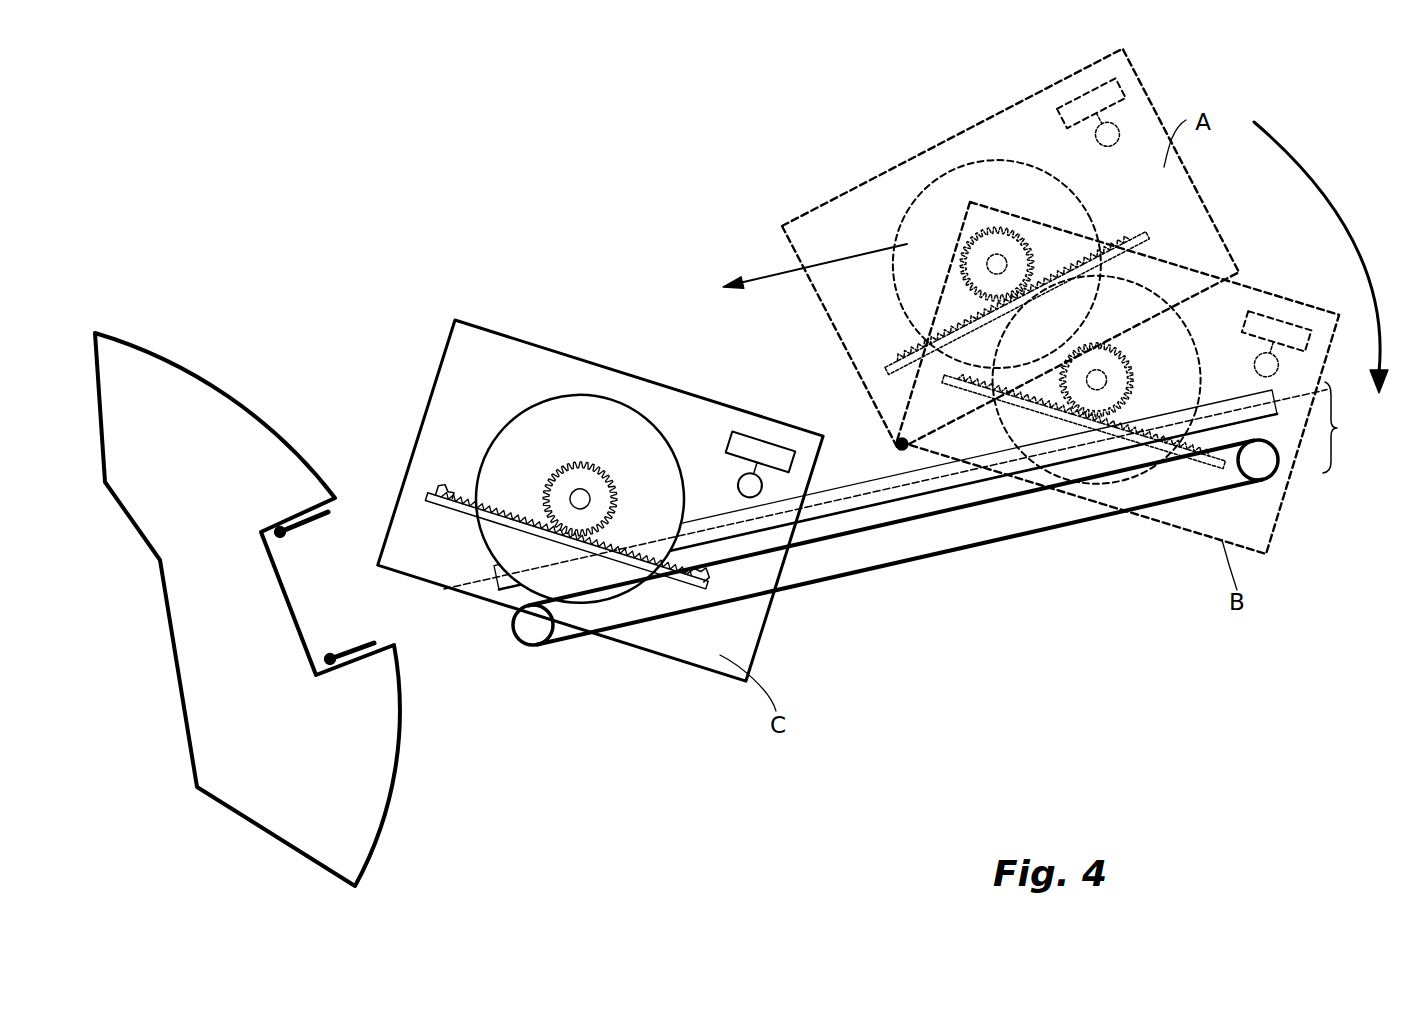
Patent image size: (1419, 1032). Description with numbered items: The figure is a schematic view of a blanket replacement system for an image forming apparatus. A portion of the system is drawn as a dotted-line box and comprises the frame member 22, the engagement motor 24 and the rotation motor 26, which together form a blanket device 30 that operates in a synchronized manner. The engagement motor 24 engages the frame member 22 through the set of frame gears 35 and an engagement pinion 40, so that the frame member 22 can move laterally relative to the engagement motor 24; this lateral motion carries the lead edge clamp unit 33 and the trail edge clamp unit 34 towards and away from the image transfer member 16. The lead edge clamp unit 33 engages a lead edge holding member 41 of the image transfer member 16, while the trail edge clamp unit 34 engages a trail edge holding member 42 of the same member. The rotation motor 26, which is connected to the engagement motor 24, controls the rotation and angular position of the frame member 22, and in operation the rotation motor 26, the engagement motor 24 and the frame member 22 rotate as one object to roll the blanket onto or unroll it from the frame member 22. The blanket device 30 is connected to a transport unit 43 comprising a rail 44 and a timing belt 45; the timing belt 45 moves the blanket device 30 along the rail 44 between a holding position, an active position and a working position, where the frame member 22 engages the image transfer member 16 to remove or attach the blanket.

The image transfer member 16 is at (234, 657).
The frame member 22 is at (624, 541).
The engagement motor 24 is at (583, 479).
The rotation motor 26 is at (651, 437).
The blanket device 30 is at (730, 406).
The lead edge clamp unit 33 is at (433, 470).
The trail edge clamp unit 34 is at (718, 568).
The set of frame gears 35 is at (498, 502).
The engagement pinion 40 is at (544, 491).
The lead edge holding member 41 is at (298, 526).
The trail edge holding member 42 is at (364, 659).
The transport unit 43 is at (1337, 428).
The rail 44 is at (932, 480).
The timing belt 45 is at (1062, 520).